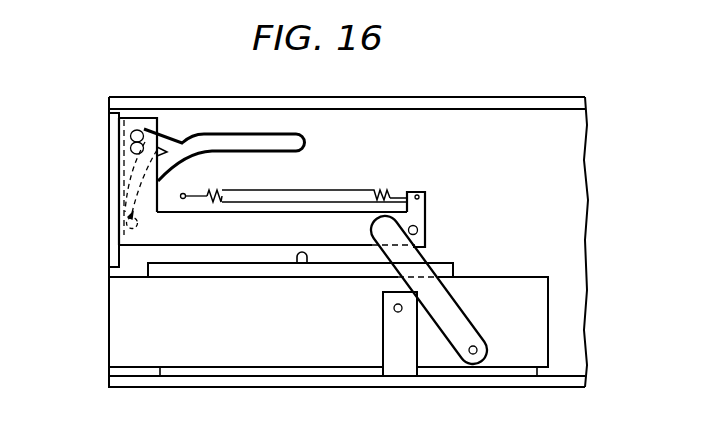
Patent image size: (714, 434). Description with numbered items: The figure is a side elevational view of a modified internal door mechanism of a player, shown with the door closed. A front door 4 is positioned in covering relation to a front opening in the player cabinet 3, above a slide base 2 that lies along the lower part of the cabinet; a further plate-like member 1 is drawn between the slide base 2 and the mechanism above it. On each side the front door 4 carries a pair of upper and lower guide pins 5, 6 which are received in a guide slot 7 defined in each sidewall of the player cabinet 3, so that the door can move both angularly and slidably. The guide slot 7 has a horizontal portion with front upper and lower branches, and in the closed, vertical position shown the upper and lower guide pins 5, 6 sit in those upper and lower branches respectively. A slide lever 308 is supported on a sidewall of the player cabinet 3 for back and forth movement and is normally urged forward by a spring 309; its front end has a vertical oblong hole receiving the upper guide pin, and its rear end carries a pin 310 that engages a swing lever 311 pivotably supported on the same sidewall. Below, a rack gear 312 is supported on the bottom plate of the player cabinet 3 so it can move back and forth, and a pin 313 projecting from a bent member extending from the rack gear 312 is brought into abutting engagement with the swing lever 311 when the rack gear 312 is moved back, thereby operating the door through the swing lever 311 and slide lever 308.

The slide plate 1 is at (160, 268).
The slide base 2 is at (132, 327).
The player cabinet 3 is at (432, 103).
The front door 4 is at (113, 187).
The upper guide pin 5 is at (138, 137).
The lower guide pin 6 is at (128, 227).
The guide slot 7 is at (230, 138).
The slide lever 308 is at (300, 223).
The spring 309 is at (360, 197).
The pin 310 is at (427, 223).
The swing lever 311 is at (455, 315).
The rack gear 312 is at (452, 372).
The pin 313 is at (388, 307).